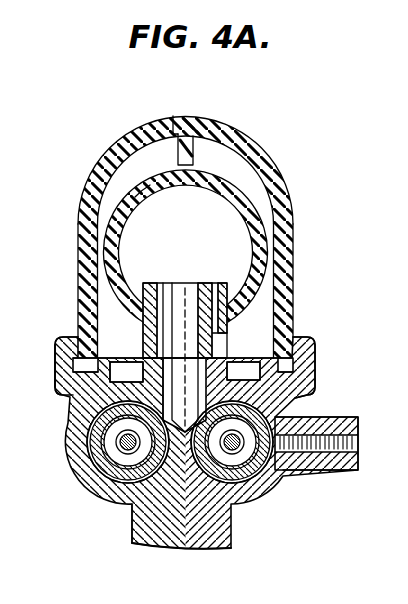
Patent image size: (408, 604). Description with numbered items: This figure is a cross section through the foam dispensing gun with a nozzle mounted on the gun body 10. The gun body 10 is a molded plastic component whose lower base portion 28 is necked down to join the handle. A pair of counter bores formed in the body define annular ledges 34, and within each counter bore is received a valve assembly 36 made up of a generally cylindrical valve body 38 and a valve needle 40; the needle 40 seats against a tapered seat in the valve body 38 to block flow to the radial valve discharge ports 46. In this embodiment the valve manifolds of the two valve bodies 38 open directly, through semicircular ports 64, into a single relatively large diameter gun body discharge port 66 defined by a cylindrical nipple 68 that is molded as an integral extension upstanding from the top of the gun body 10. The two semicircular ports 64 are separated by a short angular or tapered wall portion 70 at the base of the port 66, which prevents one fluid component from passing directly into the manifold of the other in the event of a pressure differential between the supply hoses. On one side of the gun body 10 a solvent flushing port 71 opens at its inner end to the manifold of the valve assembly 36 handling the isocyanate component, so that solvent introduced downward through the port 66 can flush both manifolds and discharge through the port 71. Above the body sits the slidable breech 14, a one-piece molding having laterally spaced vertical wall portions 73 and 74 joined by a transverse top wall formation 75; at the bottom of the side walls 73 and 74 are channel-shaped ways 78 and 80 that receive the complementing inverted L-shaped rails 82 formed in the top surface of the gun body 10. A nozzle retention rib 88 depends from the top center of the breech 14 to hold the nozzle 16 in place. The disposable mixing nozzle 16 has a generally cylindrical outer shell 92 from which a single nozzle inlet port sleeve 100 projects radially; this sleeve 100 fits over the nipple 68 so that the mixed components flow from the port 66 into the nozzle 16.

The gun body 10 is at (106, 511).
The slidable breech 14 is at (256, 131).
The disposable mixing nozzle 16 is at (256, 192).
The base portion 28 is at (140, 511).
The annular ledge 34 is at (107, 436).
The valve assembly 36 is at (112, 457).
The valve body 38 is at (236, 378).
The valve needle 40 is at (122, 484).
The radial valve discharge ports 46 is at (88, 414).
The semicircular ports 64 is at (168, 538).
The gun body discharge port 66 is at (191, 303).
The cylindrical nipple 68 is at (164, 283).
The tapered wall portion 70 is at (140, 375).
The solvent flushing port 71 is at (358, 444).
The vertical wall portion 73 is at (83, 278).
The vertical wall portion 74 is at (288, 270).
The top wall formation 75 is at (188, 114).
The channel-shaped way 78 is at (57, 352).
The channel-shaped way 80 is at (314, 368).
The inverted L-shaped rails 82 is at (85, 362).
The nozzle retention rib 88 is at (176, 147).
The outer shell 92 is at (139, 192).
The nozzle inlet port sleeve 100 is at (147, 285).